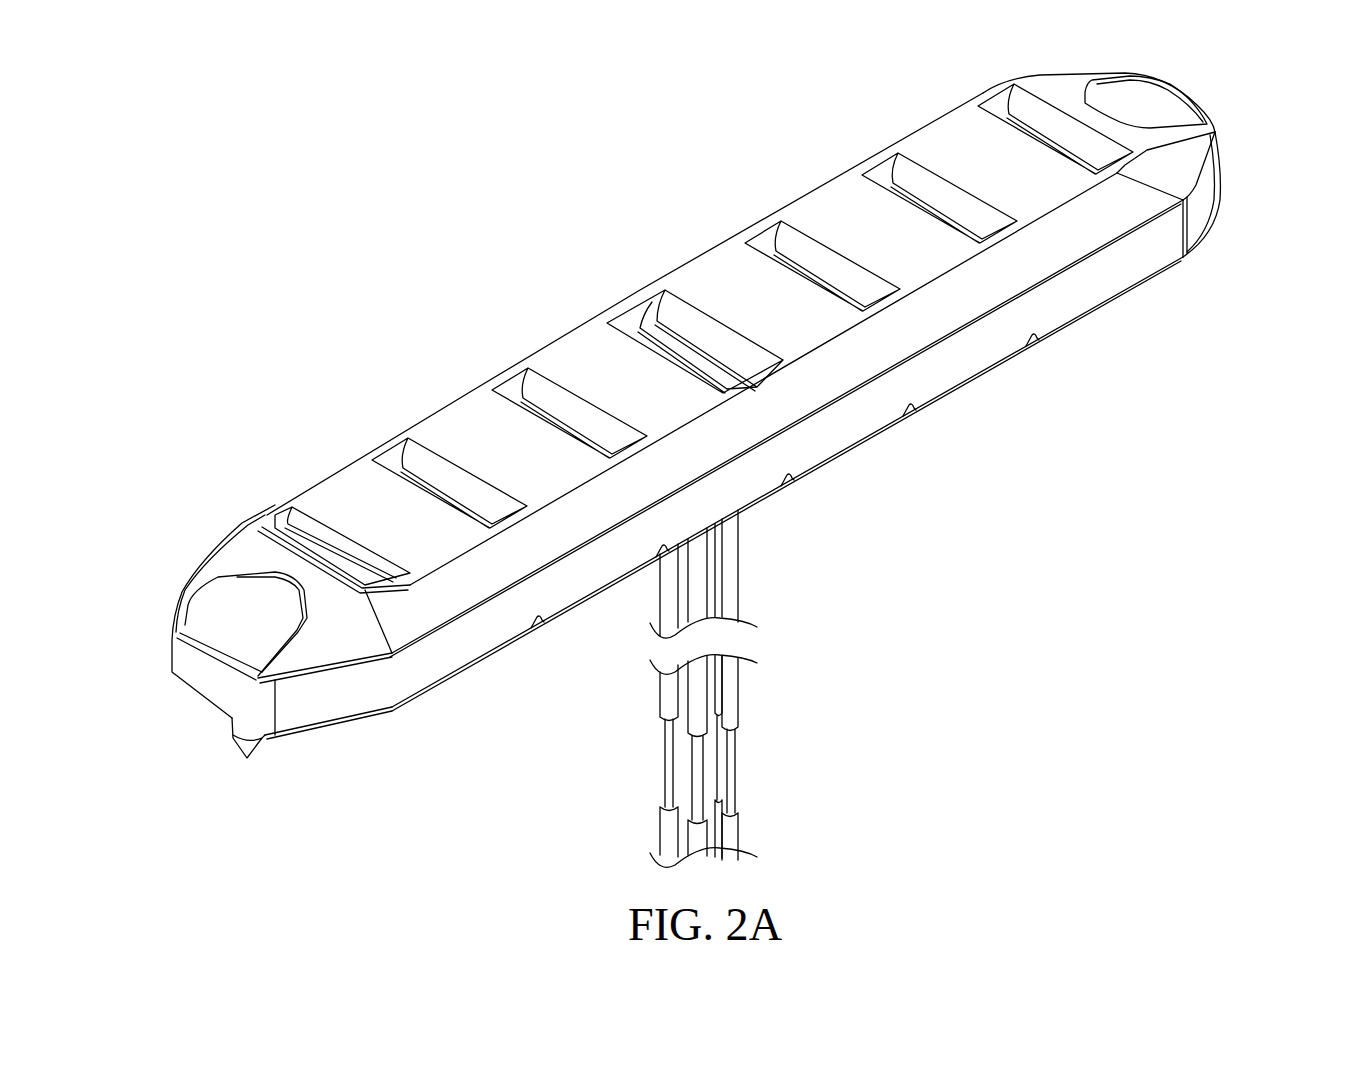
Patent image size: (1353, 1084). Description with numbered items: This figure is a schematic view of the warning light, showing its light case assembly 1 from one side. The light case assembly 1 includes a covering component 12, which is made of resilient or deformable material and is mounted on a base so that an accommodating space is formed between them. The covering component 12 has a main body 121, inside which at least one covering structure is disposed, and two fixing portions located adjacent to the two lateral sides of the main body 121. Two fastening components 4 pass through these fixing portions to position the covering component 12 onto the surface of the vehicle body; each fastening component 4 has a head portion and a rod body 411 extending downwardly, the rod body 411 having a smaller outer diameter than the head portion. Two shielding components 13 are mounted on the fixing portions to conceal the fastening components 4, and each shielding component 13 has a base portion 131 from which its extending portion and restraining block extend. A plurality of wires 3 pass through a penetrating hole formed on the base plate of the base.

The light case assembly 1 is at (908, 478).
The covering component 12 is at (503, 284).
The main body 121 is at (572, 355).
The shielding component 13 is at (1246, 68).
The base portion 131 is at (1148, 100).
The wires 3 is at (732, 585).
The fastening component 4 is at (250, 808).
The rod body 411 is at (243, 737).